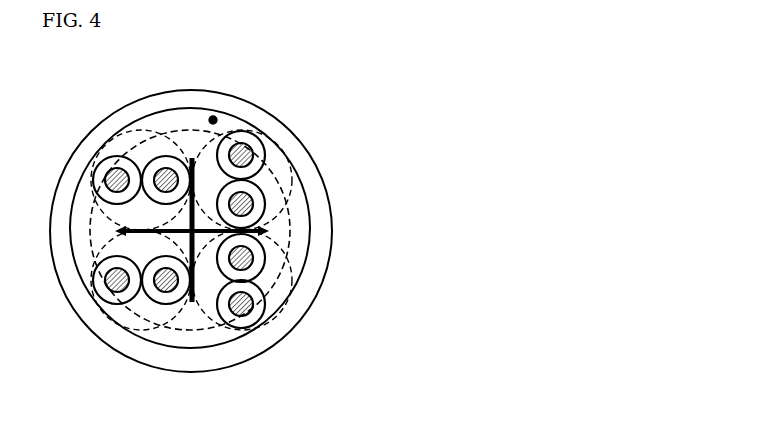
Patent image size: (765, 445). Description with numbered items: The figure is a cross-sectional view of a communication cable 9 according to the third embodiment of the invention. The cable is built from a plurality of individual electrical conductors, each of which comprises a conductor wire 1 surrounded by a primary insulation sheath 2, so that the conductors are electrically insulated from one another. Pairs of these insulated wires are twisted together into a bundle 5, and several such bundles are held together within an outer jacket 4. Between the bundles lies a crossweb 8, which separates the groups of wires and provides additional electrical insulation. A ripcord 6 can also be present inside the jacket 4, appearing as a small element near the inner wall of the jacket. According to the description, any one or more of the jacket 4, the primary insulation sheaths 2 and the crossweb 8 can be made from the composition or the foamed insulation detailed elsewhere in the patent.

The communication cable 9 is at (115, 82).
The ripcord 6 is at (221, 111).
The conductor wire 1 is at (252, 150).
The primary insulation sheath 2 is at (272, 205).
The crossweb 8 is at (291, 232).
The bundle 5 is at (294, 279).
The jacket 4 is at (290, 342).